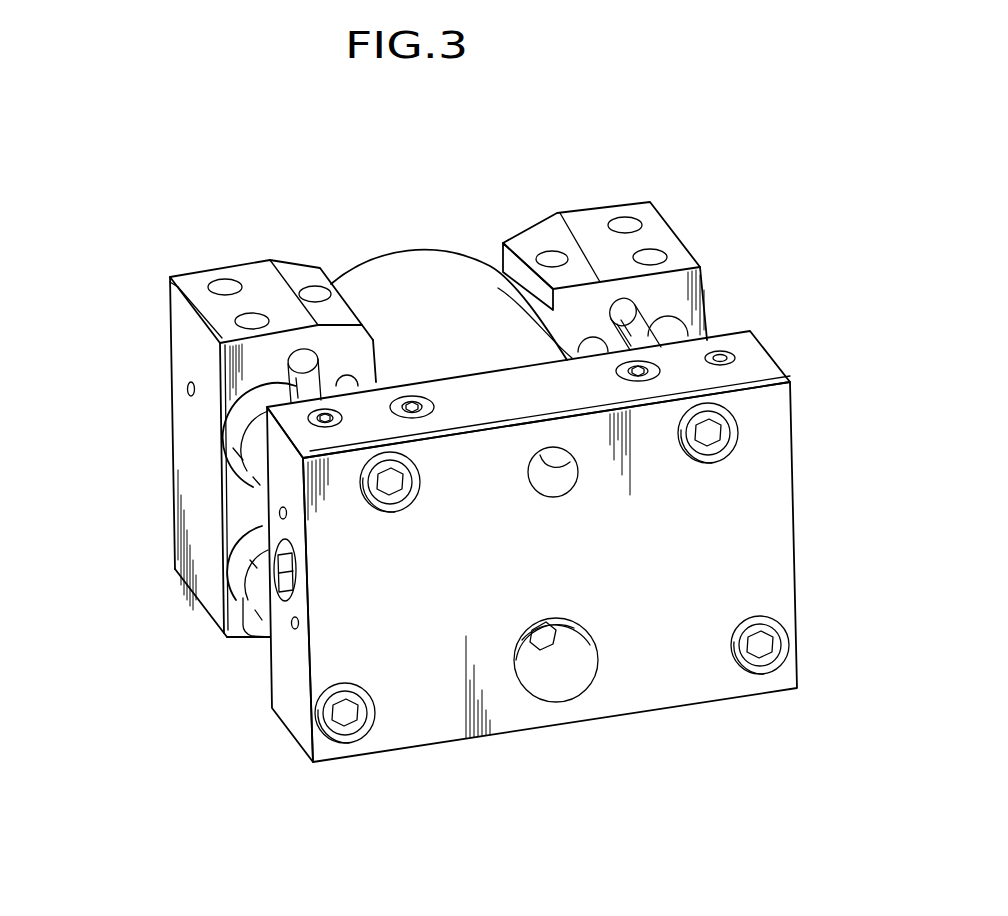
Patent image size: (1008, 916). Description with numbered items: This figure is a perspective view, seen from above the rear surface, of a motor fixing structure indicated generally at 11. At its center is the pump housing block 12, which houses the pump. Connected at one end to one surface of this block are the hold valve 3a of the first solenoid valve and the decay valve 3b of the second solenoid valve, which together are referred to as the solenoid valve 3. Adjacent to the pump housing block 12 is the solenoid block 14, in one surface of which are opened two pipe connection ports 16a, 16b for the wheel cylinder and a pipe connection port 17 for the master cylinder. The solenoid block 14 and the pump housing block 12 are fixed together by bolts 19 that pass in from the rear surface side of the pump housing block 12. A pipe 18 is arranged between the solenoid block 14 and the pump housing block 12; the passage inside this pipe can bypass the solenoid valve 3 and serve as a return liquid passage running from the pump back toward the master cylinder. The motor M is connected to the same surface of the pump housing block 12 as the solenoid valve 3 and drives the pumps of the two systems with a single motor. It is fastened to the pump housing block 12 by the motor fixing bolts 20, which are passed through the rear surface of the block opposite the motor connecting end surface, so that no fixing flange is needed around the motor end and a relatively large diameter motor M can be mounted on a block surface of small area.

The solenoid valve 3 is at (172, 510).
The hold valve 3a is at (237, 447).
The decay valve 3b is at (238, 548).
The roller drive unit 11 is at (620, 168).
The pump housing block 12 is at (712, 682).
The solenoid block 14 is at (170, 408).
The pipe connection port 16a is at (224, 286).
The pipe connection port 16b is at (252, 320).
The pipe connection port 17 is at (315, 292).
The pipe 18 is at (350, 382).
The bolts 19 is at (395, 490).
The motor fixing bolts 20 is at (562, 485).
The motor M is at (418, 282).